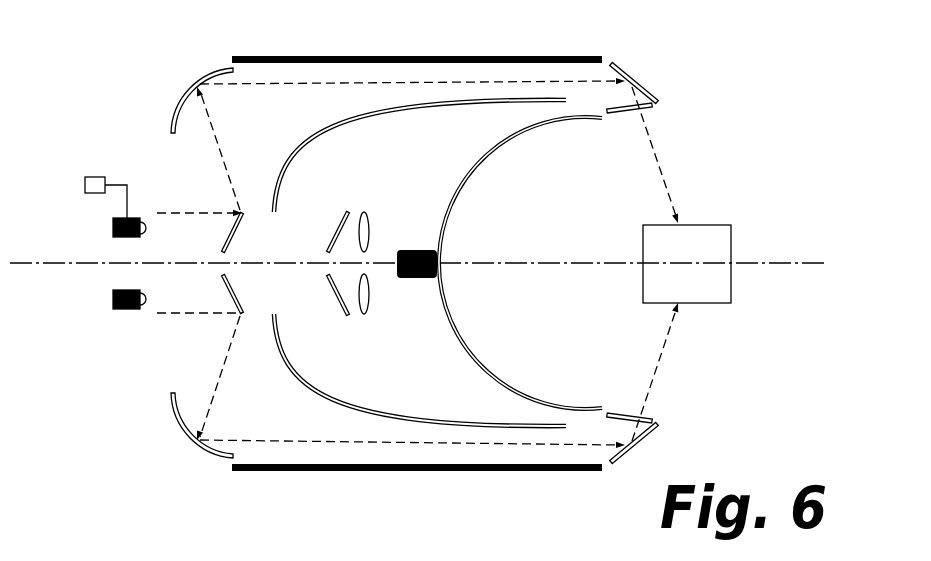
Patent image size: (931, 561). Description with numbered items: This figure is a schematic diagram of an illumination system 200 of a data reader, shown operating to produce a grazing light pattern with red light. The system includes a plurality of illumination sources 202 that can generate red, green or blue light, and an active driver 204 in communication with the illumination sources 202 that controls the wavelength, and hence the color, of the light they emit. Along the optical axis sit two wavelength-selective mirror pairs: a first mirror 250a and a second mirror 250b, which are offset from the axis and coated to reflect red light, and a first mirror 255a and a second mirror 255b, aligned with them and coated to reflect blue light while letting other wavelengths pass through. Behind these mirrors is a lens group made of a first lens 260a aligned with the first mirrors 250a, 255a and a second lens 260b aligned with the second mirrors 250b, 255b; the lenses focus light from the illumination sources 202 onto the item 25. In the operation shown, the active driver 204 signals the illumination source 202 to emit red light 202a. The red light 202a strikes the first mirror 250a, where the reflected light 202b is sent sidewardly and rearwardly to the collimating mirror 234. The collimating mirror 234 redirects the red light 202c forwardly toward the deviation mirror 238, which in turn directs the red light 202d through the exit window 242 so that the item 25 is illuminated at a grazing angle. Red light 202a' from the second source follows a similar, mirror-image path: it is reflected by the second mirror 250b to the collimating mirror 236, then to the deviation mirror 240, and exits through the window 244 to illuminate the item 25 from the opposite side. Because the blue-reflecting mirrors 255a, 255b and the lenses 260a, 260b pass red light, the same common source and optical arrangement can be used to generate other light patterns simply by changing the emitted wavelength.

The illumination system 200 is at (125, 112).
The active driver 204 is at (97, 177).
The illumination source 202 is at (113, 229).
The red light 202a is at (192, 180).
The red light 202a' is at (187, 345).
The reflected red light 202b is at (218, 148).
The red light 202c is at (364, 87).
The red light 202d is at (655, 156).
The collimating mirror 234 is at (208, 70).
The collimating mirror 236 is at (200, 443).
The deviation mirror 238 is at (642, 83).
The deviation mirror 240 is at (655, 427).
The exit window 242 is at (618, 115).
The exit window 244 is at (628, 412).
The first mirror 250a is at (234, 233).
The second mirror 250b is at (234, 281).
The first mirror 255a is at (343, 211).
The second mirror 255b is at (341, 314).
The first lens 260a is at (364, 211).
The second lens 260b is at (365, 315).
The item 25 is at (715, 223).